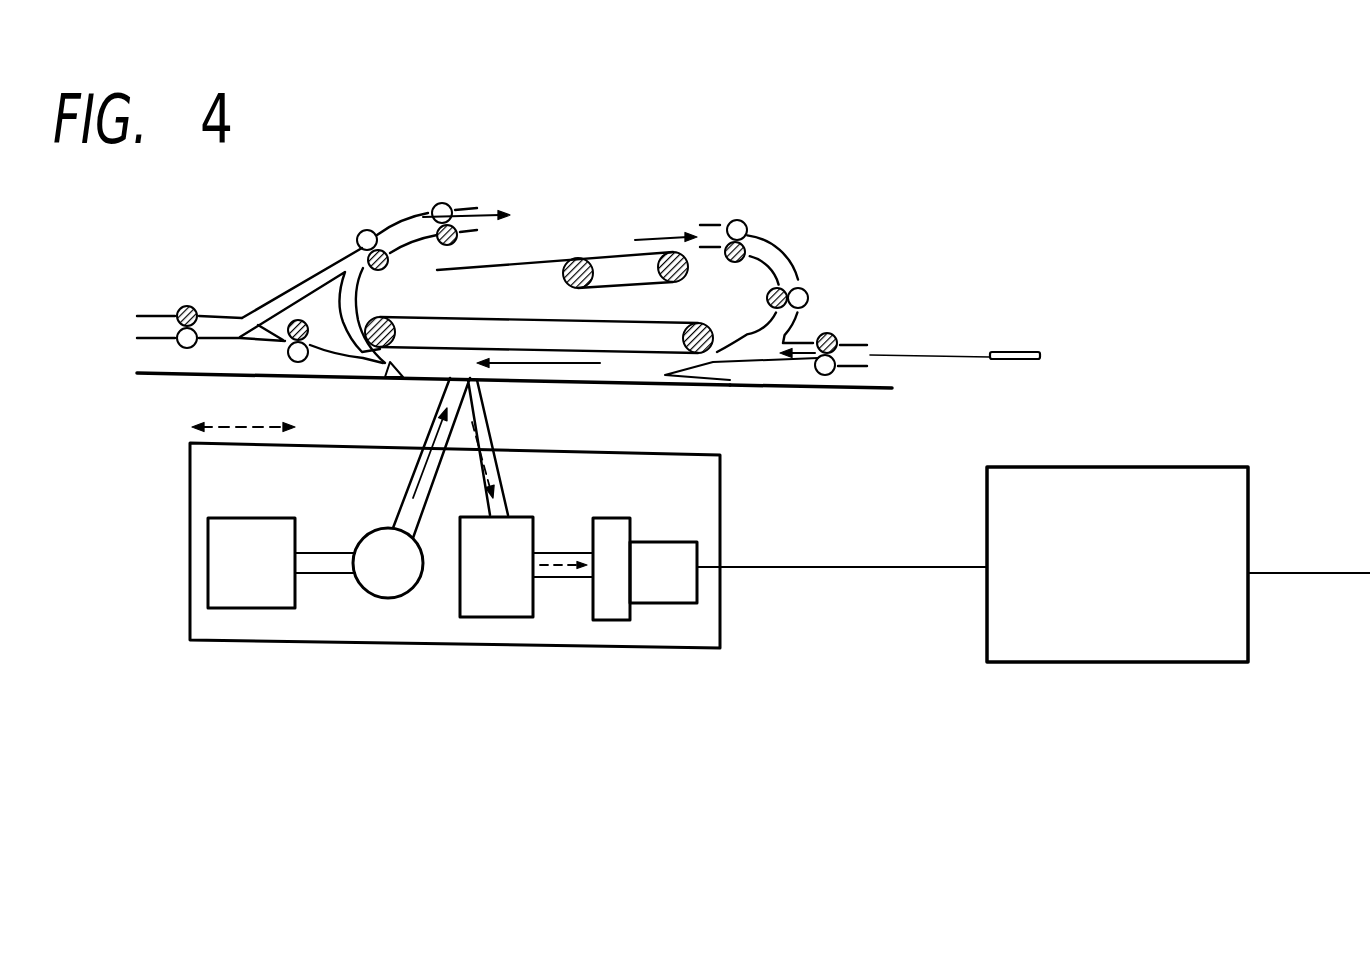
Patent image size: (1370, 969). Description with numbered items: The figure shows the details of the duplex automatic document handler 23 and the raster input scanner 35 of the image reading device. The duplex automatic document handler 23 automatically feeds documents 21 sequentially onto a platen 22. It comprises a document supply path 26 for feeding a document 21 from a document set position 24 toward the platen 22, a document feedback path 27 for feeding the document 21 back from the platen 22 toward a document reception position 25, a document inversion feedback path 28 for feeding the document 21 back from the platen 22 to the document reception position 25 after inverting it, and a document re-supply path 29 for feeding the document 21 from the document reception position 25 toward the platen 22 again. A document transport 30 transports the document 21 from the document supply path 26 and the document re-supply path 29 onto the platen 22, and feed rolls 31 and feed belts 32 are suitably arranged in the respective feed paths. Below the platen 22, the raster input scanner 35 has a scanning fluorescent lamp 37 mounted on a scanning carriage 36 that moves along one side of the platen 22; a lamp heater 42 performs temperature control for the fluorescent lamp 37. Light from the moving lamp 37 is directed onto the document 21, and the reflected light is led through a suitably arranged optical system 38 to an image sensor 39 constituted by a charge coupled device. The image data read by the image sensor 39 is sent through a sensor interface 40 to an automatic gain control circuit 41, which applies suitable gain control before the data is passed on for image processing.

The document 21 is at (990, 355).
The platen 22 is at (602, 388).
The duplex automatic document handler 23 is at (778, 273).
The document set position 24 is at (947, 369).
The document reception position 25 is at (544, 253).
The document supply path 26 is at (857, 343).
The document feedback path 27 is at (325, 293).
The document inversion feedback path 28 is at (275, 337).
The document re-supply path 29 is at (767, 252).
The document transport 30 is at (483, 320).
The feed rolls 31 is at (617, 255).
The feed belts 32 is at (363, 229).
The raster input scanner 35 is at (489, 654).
The scanning carriage 36 is at (323, 608).
The scanning fluorescent lamp 37 is at (368, 530).
The optical system 38 is at (525, 517).
The image sensor 39 is at (612, 518).
The sensor interface 40 is at (668, 542).
The automatic gain control circuit 41 is at (1122, 665).
The lamp heater 42 is at (252, 518).